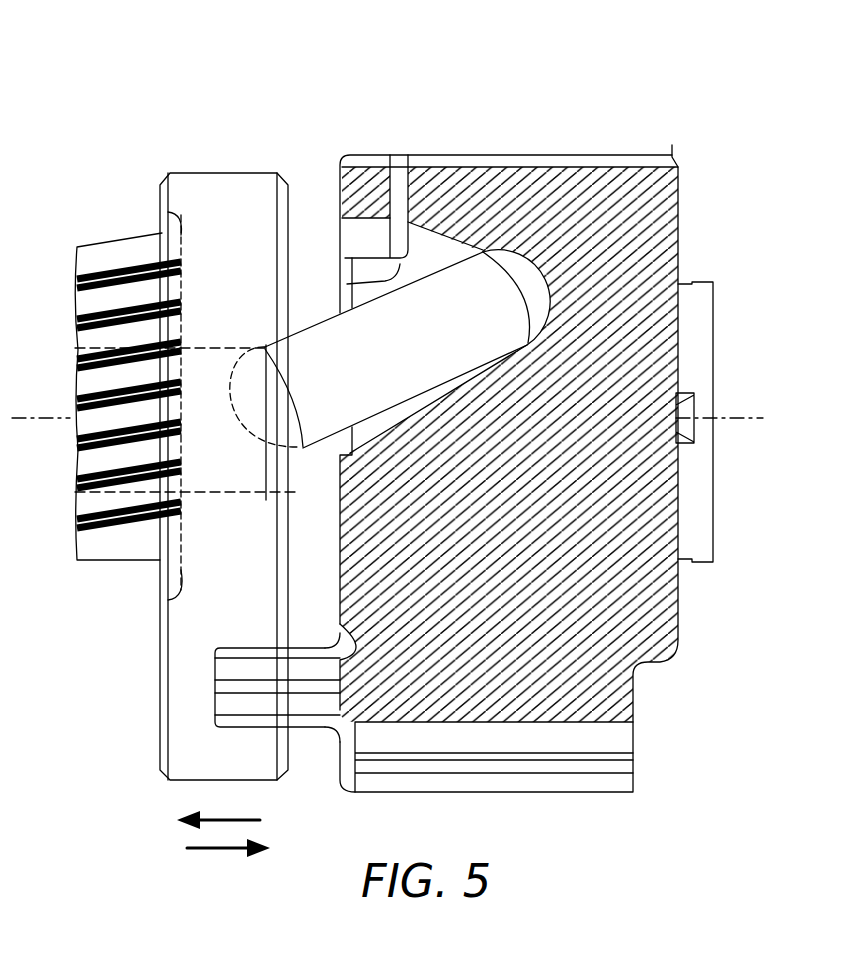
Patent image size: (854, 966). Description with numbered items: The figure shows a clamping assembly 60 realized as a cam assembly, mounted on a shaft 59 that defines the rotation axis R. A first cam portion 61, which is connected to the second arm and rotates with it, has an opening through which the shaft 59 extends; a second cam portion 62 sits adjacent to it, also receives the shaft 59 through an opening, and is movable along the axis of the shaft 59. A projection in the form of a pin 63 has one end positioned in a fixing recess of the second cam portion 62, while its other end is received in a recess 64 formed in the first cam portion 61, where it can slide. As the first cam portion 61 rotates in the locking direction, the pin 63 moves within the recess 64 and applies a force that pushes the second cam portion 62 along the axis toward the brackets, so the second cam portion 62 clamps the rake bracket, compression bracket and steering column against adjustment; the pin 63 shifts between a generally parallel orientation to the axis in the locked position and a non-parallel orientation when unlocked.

The shaft 59 is at (722, 318).
The clamping assembly 60 is at (347, 98).
The first cam portion 61 is at (688, 220).
The second cam portion 62 is at (204, 166).
The pin 63 is at (412, 362).
The recess 64 is at (383, 255).